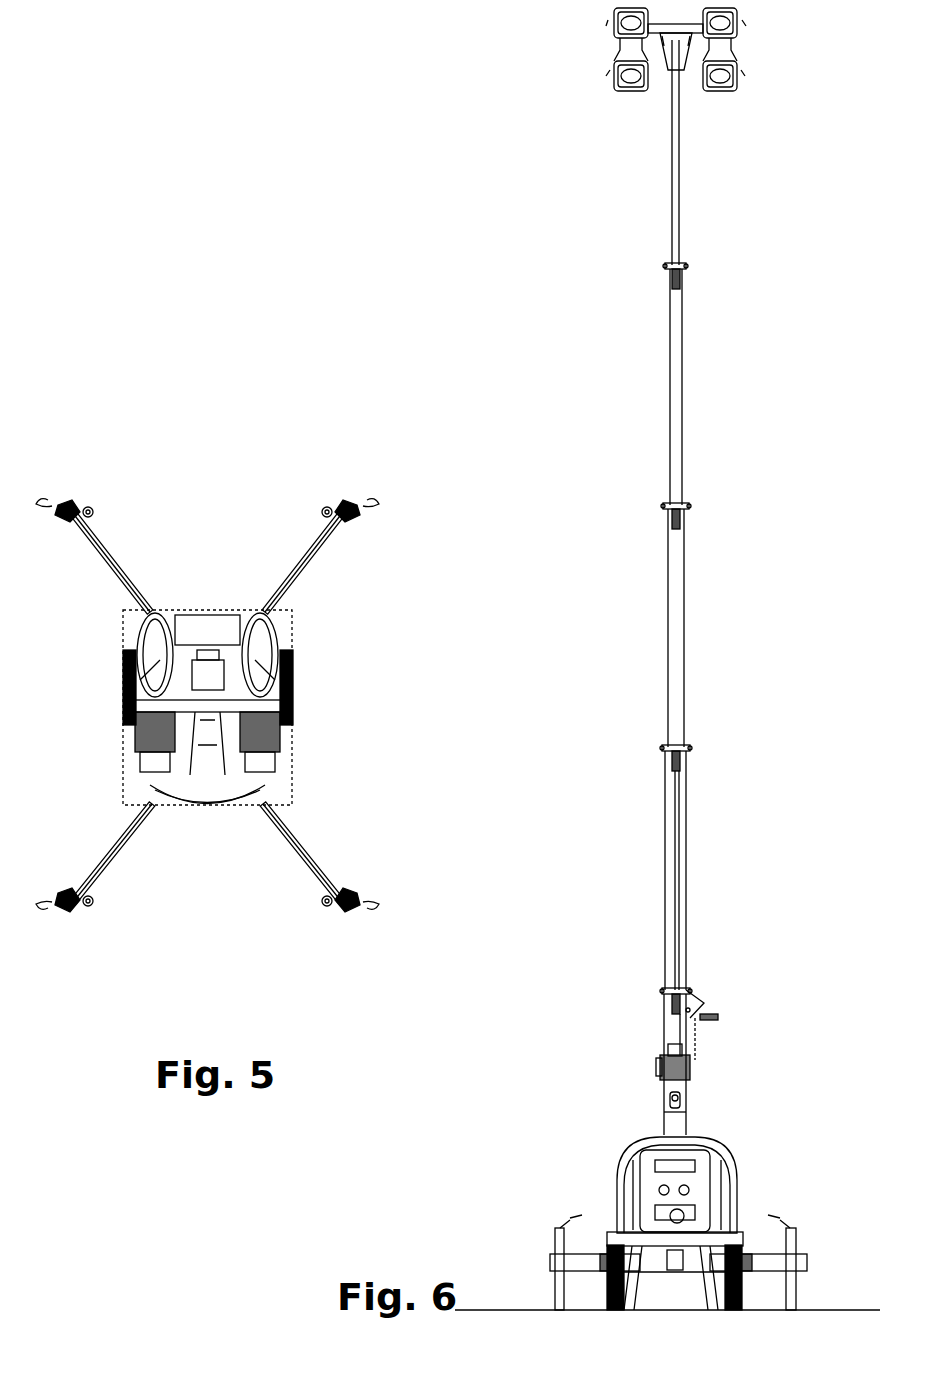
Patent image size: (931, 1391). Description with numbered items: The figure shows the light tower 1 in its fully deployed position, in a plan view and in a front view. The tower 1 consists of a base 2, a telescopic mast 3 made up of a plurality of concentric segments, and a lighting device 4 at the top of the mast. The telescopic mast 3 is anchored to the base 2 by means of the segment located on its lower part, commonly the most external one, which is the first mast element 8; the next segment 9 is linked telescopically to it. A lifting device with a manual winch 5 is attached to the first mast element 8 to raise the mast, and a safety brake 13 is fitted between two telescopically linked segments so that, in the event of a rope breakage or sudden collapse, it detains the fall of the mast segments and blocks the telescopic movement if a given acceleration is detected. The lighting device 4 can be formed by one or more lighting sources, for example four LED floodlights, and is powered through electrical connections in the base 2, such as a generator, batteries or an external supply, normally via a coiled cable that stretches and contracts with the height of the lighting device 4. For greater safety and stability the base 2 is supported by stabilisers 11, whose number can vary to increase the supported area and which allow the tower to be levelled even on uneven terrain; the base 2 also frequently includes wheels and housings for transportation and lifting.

In FIG. 6, the light tower 1 is at (676, 659).
In FIG. 6, the base 2 is at (609, 1190).
In FIG. 6, the telescopic mast 3 is at (696, 636).
In FIG. 6, the lighting device 4 is at (604, 56).
In FIG. 6, the winch 5 is at (702, 1062).
In FIG. 6, the first mast element 8 is at (654, 1020).
In FIG. 6, the second mast segment 9 is at (656, 860).
In FIG. 5, the stabilisers 11 is at (132, 556).
In FIG. 6, the stabilisers 11 is at (548, 1240).
In FIG. 6, the safety brake 13 is at (712, 1003).